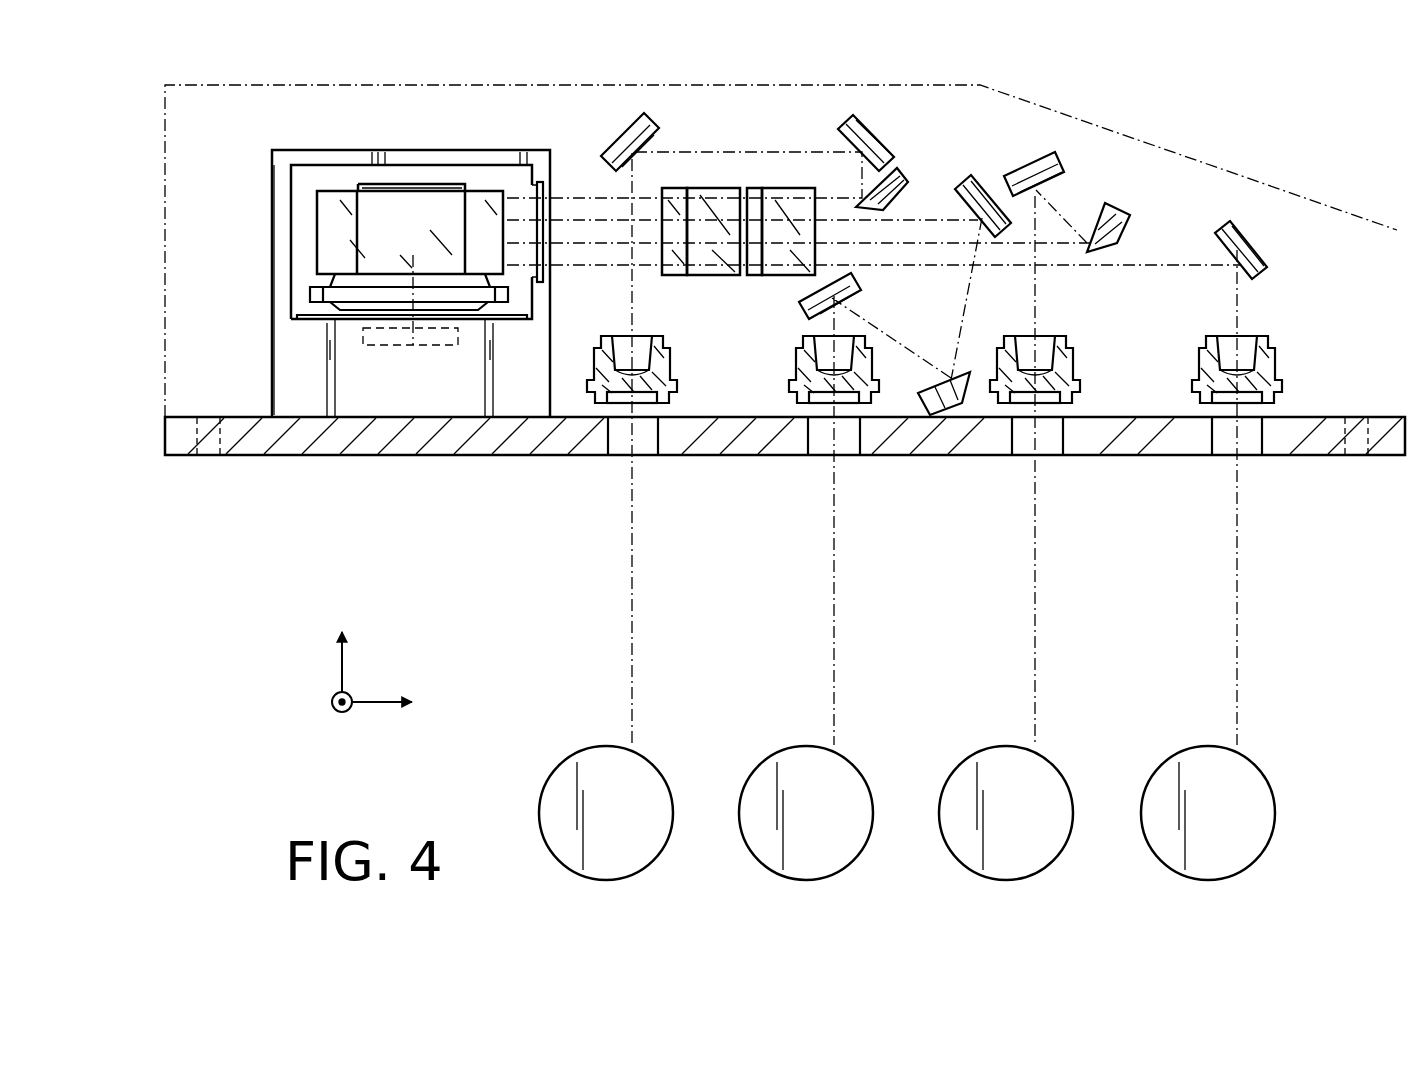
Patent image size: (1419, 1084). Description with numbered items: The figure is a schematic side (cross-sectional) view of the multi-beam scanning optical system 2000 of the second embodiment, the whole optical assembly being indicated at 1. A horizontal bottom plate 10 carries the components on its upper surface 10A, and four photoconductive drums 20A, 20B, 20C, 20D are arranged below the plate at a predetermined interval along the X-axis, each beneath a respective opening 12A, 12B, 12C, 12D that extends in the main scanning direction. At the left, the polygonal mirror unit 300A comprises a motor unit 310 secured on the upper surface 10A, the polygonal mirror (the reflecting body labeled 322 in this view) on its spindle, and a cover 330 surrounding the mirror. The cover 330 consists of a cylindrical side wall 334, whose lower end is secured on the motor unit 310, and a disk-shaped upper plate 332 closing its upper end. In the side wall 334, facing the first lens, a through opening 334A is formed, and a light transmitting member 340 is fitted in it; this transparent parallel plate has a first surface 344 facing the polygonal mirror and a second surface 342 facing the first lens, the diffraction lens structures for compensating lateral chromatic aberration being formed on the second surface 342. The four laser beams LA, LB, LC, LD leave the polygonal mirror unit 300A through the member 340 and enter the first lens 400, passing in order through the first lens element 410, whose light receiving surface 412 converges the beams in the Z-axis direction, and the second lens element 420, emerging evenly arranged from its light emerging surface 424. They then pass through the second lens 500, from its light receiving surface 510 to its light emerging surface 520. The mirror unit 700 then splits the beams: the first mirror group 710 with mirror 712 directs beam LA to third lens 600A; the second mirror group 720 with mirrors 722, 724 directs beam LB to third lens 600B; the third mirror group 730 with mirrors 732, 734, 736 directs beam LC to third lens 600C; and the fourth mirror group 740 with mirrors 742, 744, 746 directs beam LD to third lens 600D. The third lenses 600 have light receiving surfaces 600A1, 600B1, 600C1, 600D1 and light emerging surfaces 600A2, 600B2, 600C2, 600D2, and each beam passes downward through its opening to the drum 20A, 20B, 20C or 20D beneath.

The multi-beam scanning optical system 2000 is at (403, 77).
The optical unit 1 is at (1093, 110).
The polygonal mirror unit 300A is at (258, 158).
The motor unit 310 is at (388, 382).
The light emitting element 322 is at (317, 243).
The cover 330 is at (341, 150).
The upper plate 332 is at (290, 285).
The cylindrical side wall 334 is at (288, 337).
The through opening 334A is at (537, 182).
The light transmitting member 340 is at (535, 210).
The second surface 342 is at (523, 280).
The first surface 344 is at (545, 270).
The first lens 400 is at (717, 150).
The first lens element 410 is at (676, 190).
The light receiving surface 412 is at (665, 256).
The second lens element 420 is at (718, 190).
The light emerging surface 424 is at (748, 258).
The second lens 500 is at (800, 150).
The light receiving surface 510 is at (753, 205).
The light emerging surface 520 is at (814, 210).
The light detecting unit 600 is at (1303, 343).
The third lens 600A is at (1190, 395).
The third lens 600B is at (990, 395).
The third lens 600C is at (785, 395).
The third lens 600D is at (585, 395).
The light receiving surface 600A1 is at (1222, 362).
The light receiving surface 600B1 is at (1045, 372).
The light receiving surface 600C1 is at (838, 372).
The light receiving surface 600D1 is at (640, 372).
The light emerging surface 600A2 is at (1218, 404).
The light emerging surface 600B2 is at (1016, 404).
The light emerging surface 600C2 is at (814, 404).
The light emerging surface 600D2 is at (612, 404).
The mirror unit 700 is at (1196, 180).
The first mirror group 710 is at (1289, 262).
The mirror 712 is at (1242, 240).
The second mirror group 720 is at (1107, 162).
The mirror 722 is at (1118, 207).
The mirror 724 is at (1027, 173).
The third mirror group 730 is at (1000, 123).
The mirror 732 is at (975, 190).
The mirror 734 is at (935, 387).
The mirror 736 is at (858, 295).
The fourth mirror group 740 is at (925, 108).
The mirror 742 is at (897, 182).
The mirror 744 is at (868, 135).
The mirror 746 is at (635, 142).
The bottom plate 10 is at (265, 456).
The upper surface 10A is at (230, 416).
The opening 12A is at (1262, 448).
The opening 12B is at (1062, 448).
The opening 12C is at (854, 448).
The opening 12D is at (652, 448).
The photoconductive drum 20A is at (1176, 753).
The photoconductive drum 20B is at (975, 753).
The photoconductive drum 20C is at (774, 753).
The photoconductive drum 20D is at (574, 753).
The laser beam LA is at (596, 265).
The laser beam LB is at (606, 243).
The laser beam LC is at (607, 220).
The laser beam LD is at (618, 198).